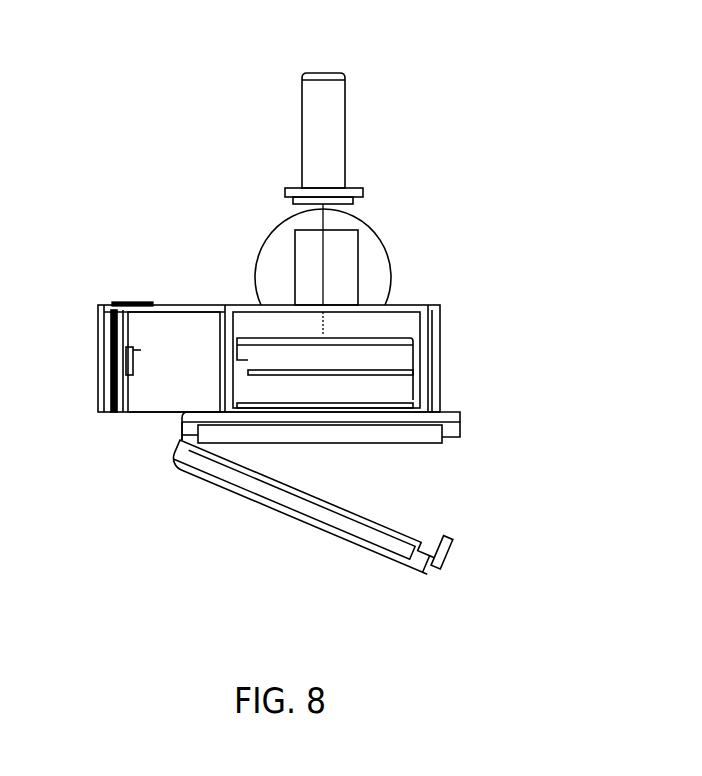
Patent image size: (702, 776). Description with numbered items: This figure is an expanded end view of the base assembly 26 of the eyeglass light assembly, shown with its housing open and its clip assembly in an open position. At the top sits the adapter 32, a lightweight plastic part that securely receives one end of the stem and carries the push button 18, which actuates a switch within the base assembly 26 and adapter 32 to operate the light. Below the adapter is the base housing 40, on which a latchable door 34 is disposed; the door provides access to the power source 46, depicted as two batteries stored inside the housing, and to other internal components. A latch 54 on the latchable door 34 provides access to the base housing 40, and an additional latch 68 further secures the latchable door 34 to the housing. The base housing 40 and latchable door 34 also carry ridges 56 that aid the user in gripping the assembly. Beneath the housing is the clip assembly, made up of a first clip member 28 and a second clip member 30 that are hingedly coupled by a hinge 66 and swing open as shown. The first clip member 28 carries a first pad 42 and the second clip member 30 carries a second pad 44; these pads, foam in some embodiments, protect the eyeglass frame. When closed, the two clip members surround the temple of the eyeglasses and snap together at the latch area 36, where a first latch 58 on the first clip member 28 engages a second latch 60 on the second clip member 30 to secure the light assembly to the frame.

The push button 18 is at (318, 73).
The base assembly 26 is at (505, 108).
The first clip member 28 is at (452, 410).
The second clip member 30 is at (407, 572).
The adapter 32 is at (266, 238).
The latchable door 34 is at (178, 306).
The latch area 36 is at (444, 497).
The base housing 40 is at (245, 305).
The first pad 42 is at (305, 437).
The second pad 44 is at (336, 512).
The power source 46 is at (410, 357).
The latch 54 is at (140, 302).
The ridges 56 is at (98, 360).
The first latch 58 is at (461, 413).
The second latch 60 is at (452, 556).
The hinge 66 is at (183, 434).
The additional latch 68 is at (126, 363).